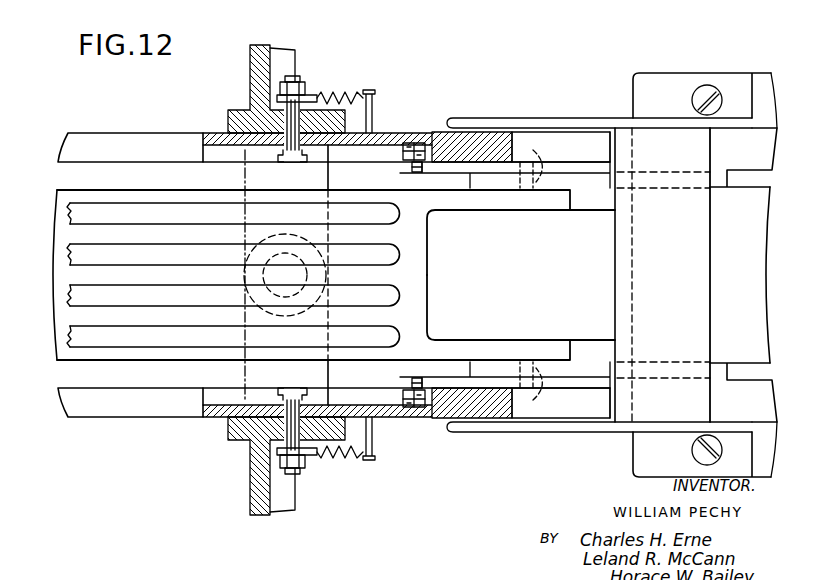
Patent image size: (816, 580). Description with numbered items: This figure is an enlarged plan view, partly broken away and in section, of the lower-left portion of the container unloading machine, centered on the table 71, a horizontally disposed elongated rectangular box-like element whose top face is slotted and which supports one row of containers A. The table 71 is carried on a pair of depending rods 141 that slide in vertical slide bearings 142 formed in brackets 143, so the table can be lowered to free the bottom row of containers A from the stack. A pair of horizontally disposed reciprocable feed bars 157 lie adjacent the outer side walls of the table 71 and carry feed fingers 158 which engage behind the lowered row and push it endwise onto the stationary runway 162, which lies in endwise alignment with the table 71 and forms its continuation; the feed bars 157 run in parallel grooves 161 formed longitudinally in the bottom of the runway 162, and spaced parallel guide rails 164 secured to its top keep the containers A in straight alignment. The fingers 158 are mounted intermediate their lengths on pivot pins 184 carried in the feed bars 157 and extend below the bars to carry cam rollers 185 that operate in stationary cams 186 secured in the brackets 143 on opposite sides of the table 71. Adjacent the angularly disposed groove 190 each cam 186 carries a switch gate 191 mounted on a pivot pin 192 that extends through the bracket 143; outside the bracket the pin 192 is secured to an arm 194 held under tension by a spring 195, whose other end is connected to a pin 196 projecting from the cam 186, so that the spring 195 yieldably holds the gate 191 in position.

The table 71 is at (410, 275).
The depending rods 141 is at (257, 247).
The vertical slide bearings 142 is at (253, 295).
The brackets 143 is at (253, 178).
The feed bars 157 is at (596, 182).
The feed fingers 158 is at (574, 170).
The parallel grooves 161 is at (762, 189).
The runway 162 is at (746, 262).
The guide rails 164 is at (662, 87).
The pivot pins 184 is at (540, 277).
The cam rollers 185 is at (408, 145).
The stationary cams 186 is at (108, 143).
The angularly disposed groove 190 is at (438, 153).
The switch gate 191 is at (378, 143).
The pivot pin 192 is at (307, 142).
The arms 194 is at (302, 97).
The springs 195 is at (346, 92).
The pins 196 is at (372, 92).
The containers A is at (690, 310).